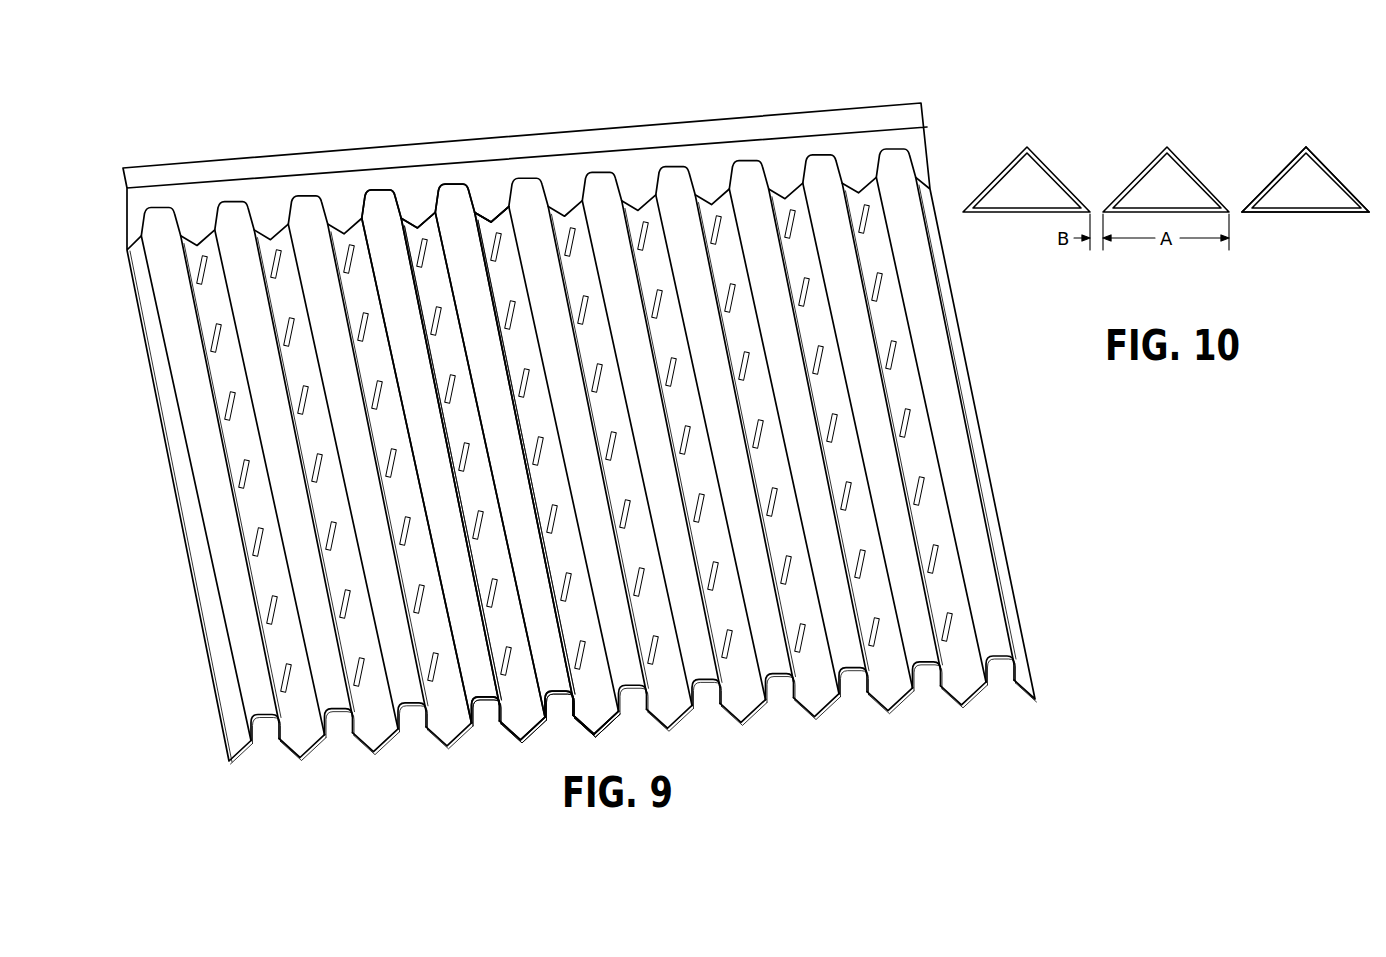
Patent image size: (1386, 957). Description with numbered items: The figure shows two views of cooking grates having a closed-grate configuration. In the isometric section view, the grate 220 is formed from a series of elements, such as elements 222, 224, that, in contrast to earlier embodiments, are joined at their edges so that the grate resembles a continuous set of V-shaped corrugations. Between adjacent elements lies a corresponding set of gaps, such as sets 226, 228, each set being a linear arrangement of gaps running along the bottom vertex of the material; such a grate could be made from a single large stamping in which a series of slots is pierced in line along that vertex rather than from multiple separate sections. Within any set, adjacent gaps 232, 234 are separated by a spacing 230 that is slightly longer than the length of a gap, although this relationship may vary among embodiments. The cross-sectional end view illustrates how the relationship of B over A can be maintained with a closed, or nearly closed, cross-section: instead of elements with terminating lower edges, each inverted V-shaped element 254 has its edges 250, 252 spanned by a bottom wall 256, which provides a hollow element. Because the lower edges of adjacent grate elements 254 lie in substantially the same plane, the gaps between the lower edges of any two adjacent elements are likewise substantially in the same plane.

In FIG. 9, the grate 220 is at (212, 128).
In FIG. 9, the element 222 is at (383, 196).
In FIG. 9, the element 224 is at (455, 193).
In FIG. 9, the set of gaps 226 is at (414, 200).
In FIG. 9, the set of gaps 228 is at (489, 200).
In FIG. 9, the spacing 230 is at (523, 343).
In FIG. 9, the gap 232 is at (513, 318).
In FIG. 9, the gap 234 is at (530, 377).
In FIG. 10, the edge 250 is at (1242, 213).
In FIG. 10, the edge 252 is at (1373, 213).
In FIG. 10, the element 254 is at (1276, 155).
In FIG. 10, the bottom wall 256 is at (1304, 213).